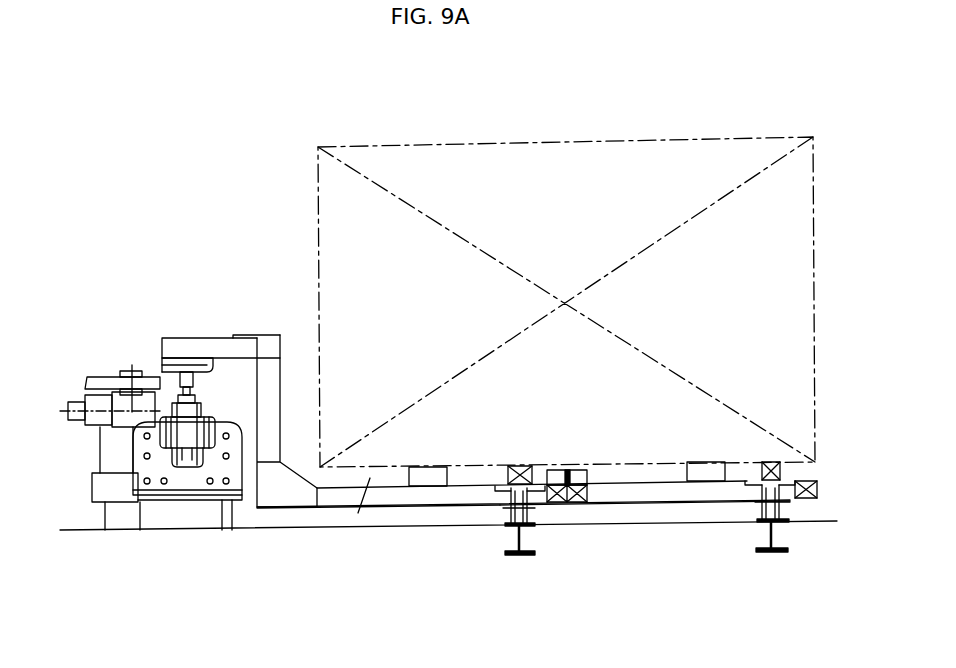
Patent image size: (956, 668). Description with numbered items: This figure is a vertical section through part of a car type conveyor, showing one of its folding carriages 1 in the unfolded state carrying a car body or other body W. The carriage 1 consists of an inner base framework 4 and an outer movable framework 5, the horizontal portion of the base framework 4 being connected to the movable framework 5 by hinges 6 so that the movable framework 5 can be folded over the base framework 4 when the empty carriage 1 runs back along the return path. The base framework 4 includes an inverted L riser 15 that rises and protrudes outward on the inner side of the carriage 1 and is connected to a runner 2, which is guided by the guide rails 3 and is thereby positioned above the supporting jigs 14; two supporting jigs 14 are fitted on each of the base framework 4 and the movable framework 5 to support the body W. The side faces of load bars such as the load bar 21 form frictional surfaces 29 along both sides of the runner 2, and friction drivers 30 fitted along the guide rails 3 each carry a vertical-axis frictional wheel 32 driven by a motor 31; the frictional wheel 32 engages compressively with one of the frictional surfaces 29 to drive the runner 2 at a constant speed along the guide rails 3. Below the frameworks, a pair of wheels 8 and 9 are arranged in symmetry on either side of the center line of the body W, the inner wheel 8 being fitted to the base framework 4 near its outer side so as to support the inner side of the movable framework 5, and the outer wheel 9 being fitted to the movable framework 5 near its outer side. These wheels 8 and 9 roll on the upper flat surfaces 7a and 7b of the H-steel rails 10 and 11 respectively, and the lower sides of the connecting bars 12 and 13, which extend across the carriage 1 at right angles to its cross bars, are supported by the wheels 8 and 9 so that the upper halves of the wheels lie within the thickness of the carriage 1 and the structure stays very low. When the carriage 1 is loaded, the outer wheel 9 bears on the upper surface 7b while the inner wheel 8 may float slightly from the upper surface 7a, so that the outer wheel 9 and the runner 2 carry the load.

The body W is at (590, 142).
The carriage 1 is at (643, 476).
The runner 2 is at (203, 403).
The guide rails 3 is at (221, 442).
The inner base framework 4 is at (402, 508).
The outer movable framework 5 is at (668, 508).
The hinges 6 is at (567, 468).
The upper flat surface 7a is at (533, 515).
The upper flat surface 7b is at (790, 514).
The wheel 8 is at (512, 513).
The wheel 9 is at (763, 514).
The H-steel rail 10 is at (515, 557).
The H-steel rail 11 is at (772, 554).
The connecting bar 12 is at (520, 466).
The connecting bar 13 is at (770, 462).
The supporting jig 14 is at (428, 472).
The inverted L riser 15 is at (200, 338).
The load bar 21 is at (211, 362).
The frictional surface 29 is at (150, 362).
The friction driver 30 is at (102, 370).
The motor 31 is at (98, 428).
The frictional wheel 32 is at (105, 373).